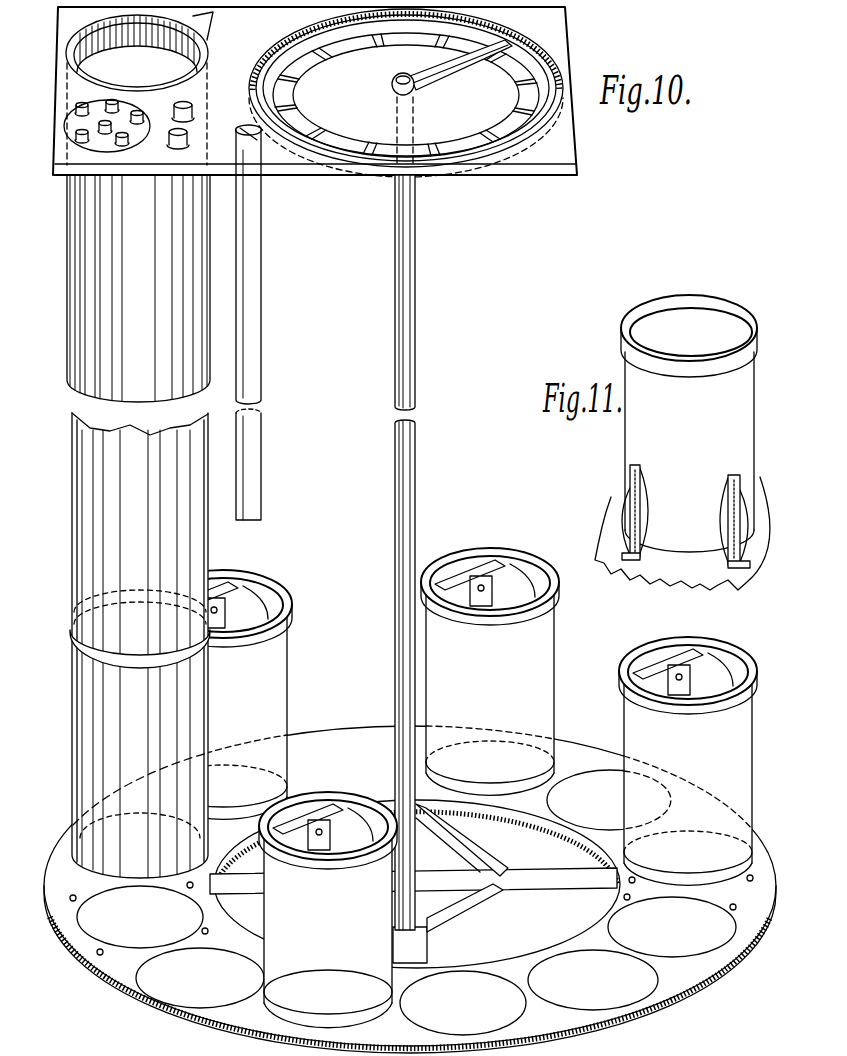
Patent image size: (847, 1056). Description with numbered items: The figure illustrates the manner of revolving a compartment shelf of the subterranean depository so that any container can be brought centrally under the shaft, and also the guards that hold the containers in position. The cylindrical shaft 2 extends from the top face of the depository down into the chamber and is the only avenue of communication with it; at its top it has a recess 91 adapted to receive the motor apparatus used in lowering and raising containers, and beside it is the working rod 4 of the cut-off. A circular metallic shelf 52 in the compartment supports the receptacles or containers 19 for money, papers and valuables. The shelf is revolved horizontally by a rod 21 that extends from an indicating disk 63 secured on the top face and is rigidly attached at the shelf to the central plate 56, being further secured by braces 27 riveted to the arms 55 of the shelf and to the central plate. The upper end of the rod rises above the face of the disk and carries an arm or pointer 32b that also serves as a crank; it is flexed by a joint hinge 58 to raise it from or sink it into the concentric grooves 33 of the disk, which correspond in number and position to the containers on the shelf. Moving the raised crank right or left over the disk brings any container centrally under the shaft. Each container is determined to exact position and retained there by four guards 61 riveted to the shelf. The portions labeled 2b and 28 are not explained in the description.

In FIG. 10, the cylindrical shaft 2 is at (138, 272).
In FIG. 10, the lower casing section 2b is at (140, 645).
In FIG. 10, the working rod 4 is at (256, 322).
In FIG. 10, the container 19 is at (455, 788).
In FIG. 11, the container 19 is at (689, 423).
In FIG. 10, the rod 21 is at (419, 552).
In FIG. 10, the brace 27 is at (470, 852).
In FIG. 10, the opening in base 28 is at (406, 902).
In FIG. 10, the arm or pointer 32b is at (461, 65).
In FIG. 10, the groove 33 is at (305, 126).
In FIG. 10, the circular metallic shelf 52 is at (410, 889).
In FIG. 11, the circular metallic shelf 52 is at (696, 533).
In FIG. 10, the arm of the shelf 55 is at (415, 884).
In FIG. 10, the central plate 56 is at (465, 908).
In FIG. 10, the joint hinge 58 is at (420, 87).
In FIG. 11, the guard 61 is at (640, 498).
In FIG. 10, the indicating disk 63 is at (406, 93).
In FIG. 10, the recess 91 is at (206, 24).